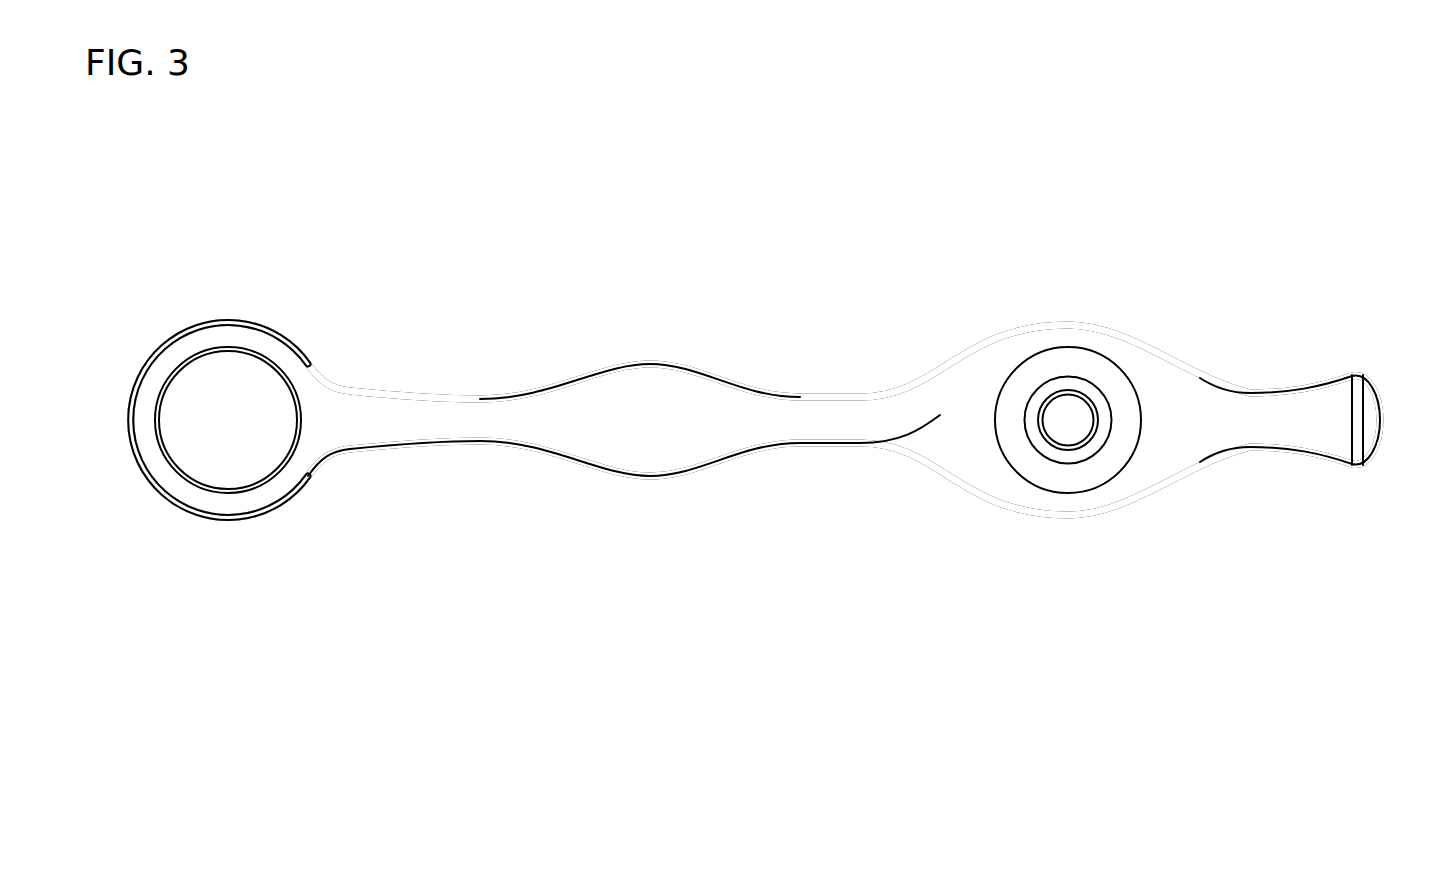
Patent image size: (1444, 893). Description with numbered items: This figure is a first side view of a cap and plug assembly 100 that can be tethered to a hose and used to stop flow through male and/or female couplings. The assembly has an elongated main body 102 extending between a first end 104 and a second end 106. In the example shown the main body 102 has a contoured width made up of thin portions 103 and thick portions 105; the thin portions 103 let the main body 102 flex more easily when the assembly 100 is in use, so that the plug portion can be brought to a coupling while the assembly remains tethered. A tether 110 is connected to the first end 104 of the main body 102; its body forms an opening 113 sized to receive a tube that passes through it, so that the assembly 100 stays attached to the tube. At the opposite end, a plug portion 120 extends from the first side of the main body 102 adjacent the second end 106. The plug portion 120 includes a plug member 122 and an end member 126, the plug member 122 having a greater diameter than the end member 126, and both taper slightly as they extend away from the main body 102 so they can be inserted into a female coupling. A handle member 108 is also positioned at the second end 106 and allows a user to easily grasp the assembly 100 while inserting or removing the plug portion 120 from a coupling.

The cap and plug assembly 100 is at (898, 203).
The main body 102 is at (648, 385).
The thin portions 103 is at (843, 433).
The first end 104 is at (342, 433).
The thick portions 105 is at (647, 463).
The second end 106 is at (1275, 408).
The handle member 108 is at (1370, 413).
The tether 110 is at (202, 325).
The opening 113 is at (205, 462).
The plug portion 120 is at (1138, 339).
The plug member 122 is at (1095, 448).
The end member 126 is at (1068, 405).